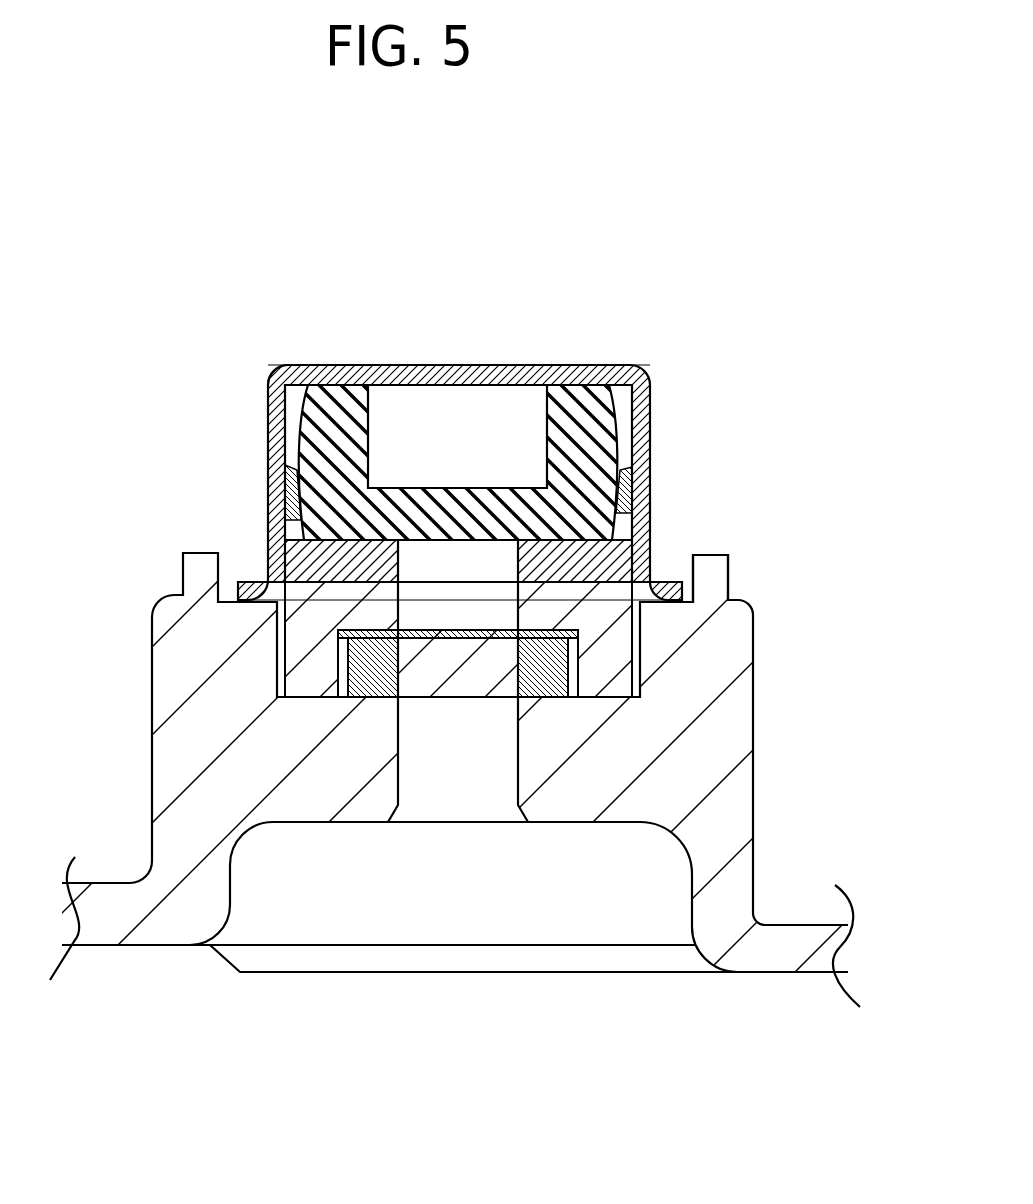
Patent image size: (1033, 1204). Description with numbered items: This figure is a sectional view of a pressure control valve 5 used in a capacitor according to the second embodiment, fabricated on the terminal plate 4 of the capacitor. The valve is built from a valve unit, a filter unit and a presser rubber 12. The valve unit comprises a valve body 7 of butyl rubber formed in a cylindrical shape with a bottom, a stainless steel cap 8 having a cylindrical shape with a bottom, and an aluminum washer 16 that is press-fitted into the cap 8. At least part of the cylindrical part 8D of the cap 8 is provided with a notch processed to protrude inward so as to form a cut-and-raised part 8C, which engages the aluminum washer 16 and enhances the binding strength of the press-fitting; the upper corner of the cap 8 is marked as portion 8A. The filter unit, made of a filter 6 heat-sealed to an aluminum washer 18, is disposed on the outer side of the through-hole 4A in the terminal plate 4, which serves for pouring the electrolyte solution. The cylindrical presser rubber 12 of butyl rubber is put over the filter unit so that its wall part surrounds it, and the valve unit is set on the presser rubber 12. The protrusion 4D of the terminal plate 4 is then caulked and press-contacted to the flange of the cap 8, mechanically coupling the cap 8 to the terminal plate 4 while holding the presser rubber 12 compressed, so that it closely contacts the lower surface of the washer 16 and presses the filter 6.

The terminal plate 4 is at (115, 725).
The through-hole 4A is at (482, 788).
The protrusion 4D is at (710, 557).
The pressure control valve 5 is at (500, 340).
The filter 6 is at (447, 640).
The valve body 7 is at (578, 402).
The cap 8 is at (325, 353).
The top corner portion of cap 8A is at (278, 387).
The cut-and-raised part 8C is at (268, 485).
The cylindrical part 8D is at (650, 435).
The presser rubber 12 is at (605, 668).
The washer 16 is at (300, 562).
The washer 18 is at (373, 680).